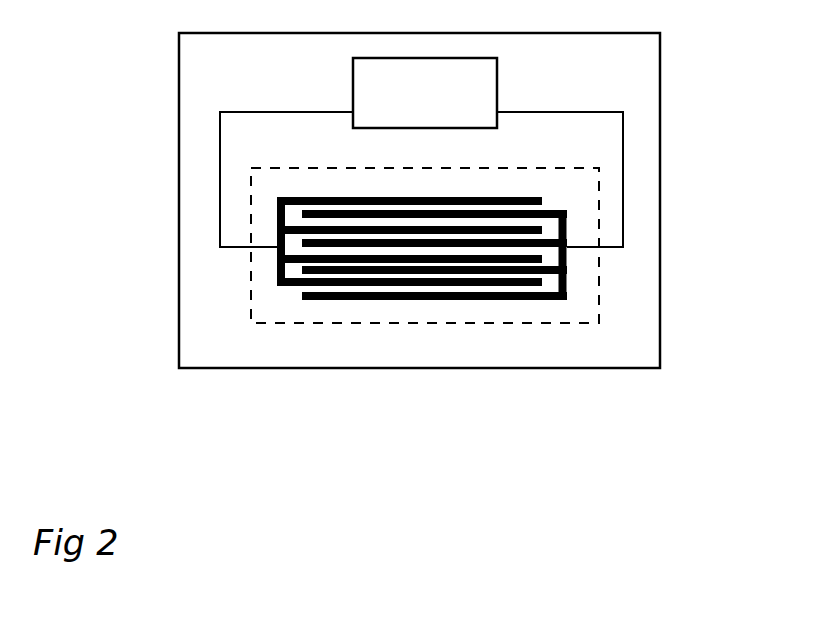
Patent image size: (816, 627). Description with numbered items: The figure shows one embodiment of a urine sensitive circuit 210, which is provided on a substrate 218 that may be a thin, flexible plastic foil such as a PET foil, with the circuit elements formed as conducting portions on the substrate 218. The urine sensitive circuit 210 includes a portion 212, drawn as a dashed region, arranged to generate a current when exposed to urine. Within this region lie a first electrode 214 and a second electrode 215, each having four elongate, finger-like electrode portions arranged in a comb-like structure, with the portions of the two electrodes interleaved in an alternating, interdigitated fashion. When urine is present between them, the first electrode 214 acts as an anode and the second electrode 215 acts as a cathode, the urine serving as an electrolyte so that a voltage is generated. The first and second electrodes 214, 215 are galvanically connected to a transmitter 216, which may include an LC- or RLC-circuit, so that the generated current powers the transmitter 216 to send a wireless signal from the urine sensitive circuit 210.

The urine sensitive circuit 210 is at (631, 304).
The portion 212 is at (413, 323).
The first electrode 214 is at (292, 287).
The second electrode 215 is at (553, 299).
The transmitter 216 is at (448, 107).
The substrate 218 is at (660, 237).